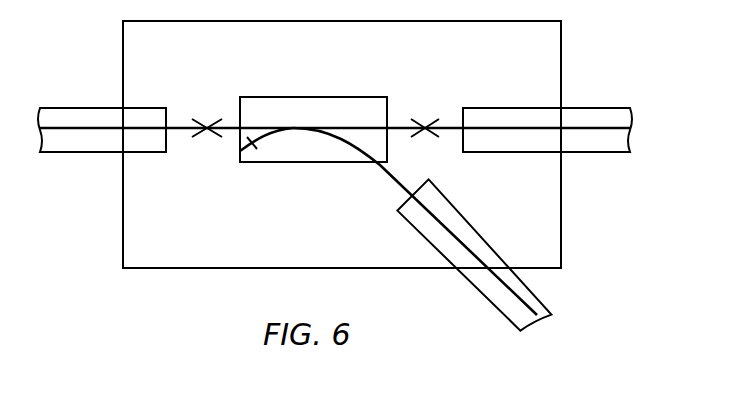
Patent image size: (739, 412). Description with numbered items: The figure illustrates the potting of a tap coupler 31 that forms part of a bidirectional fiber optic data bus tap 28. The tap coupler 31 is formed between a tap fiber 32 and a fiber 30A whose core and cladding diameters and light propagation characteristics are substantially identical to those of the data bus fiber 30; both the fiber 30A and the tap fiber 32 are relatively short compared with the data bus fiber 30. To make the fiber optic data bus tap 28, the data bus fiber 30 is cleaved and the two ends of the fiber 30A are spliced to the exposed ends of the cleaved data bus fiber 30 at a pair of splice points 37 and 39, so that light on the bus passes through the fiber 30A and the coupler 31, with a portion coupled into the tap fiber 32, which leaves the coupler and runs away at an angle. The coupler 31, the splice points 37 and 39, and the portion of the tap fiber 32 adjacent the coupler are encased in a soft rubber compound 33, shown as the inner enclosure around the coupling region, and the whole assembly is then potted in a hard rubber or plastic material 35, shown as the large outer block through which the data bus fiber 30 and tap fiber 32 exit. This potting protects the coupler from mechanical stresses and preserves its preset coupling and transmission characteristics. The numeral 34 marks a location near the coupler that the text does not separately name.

The fiber optic data bus tap 28 is at (251, 231).
The data bus fiber 30 is at (590, 151).
The fiber 30A is at (250, 128).
The tap coupler 31 is at (314, 113).
The tap fiber 32 is at (384, 166).
The soft rubber compound 33 is at (301, 163).
The fiber end 34 is at (247, 144).
The hard rubber or plastic material 35 is at (123, 221).
The splice point 37 is at (198, 106).
The splice point 39 is at (425, 100).